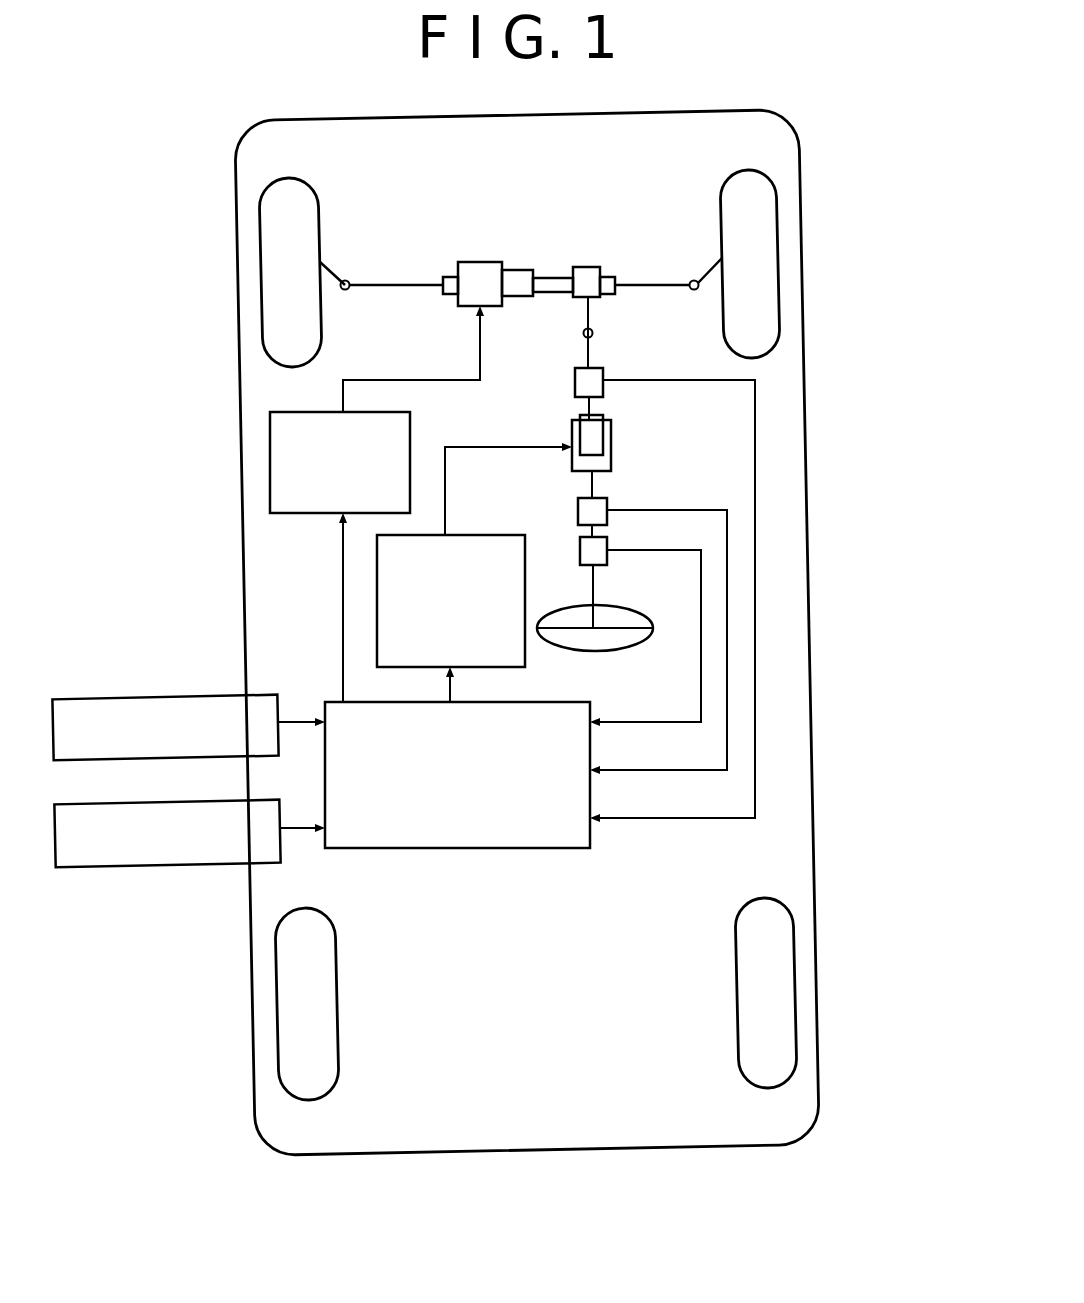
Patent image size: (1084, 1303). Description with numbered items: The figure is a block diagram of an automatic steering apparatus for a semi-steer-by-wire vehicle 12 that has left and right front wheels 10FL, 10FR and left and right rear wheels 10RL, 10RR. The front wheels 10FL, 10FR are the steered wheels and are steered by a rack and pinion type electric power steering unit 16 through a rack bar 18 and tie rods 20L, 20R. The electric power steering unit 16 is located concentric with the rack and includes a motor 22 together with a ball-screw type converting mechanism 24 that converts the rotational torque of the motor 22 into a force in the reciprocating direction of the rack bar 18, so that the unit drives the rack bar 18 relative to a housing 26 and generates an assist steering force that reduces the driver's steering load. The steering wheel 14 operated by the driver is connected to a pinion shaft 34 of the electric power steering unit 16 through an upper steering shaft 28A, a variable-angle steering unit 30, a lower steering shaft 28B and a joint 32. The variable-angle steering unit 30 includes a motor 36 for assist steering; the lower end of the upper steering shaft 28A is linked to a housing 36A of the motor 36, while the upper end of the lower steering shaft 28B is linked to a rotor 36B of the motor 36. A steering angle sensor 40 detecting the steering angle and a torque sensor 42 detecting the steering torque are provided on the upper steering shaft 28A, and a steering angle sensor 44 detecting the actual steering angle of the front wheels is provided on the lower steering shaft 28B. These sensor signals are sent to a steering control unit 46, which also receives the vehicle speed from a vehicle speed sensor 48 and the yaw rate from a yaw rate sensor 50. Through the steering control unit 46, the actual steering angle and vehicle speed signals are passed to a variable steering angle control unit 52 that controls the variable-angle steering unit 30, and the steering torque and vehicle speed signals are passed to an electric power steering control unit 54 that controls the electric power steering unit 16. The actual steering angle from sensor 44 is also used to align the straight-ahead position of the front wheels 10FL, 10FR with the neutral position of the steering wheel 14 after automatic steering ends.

The left front wheel 10FL is at (262, 289).
The right front wheel 10FR is at (778, 278).
The left rear wheel 10RL is at (278, 1012).
The right rear wheel 10RR is at (795, 1013).
The vehicle 12 is at (808, 492).
The steering wheel 14 is at (615, 651).
The electric power steering unit 16 is at (573, 251).
The rack bar 18 is at (432, 283).
The left tie rod 20L is at (350, 270).
The right tie rod 20R is at (700, 270).
The motor 22 is at (480, 262).
The ball-screw type converting mechanism 24 is at (517, 297).
The housing 26 is at (546, 278).
The upper steering shaft 28A is at (598, 585).
The lower steering shaft 28B is at (596, 356).
The variable-angle steering unit 30 is at (570, 462).
The joint 32 is at (594, 333).
The pinion shaft 34 is at (592, 302).
The motor 36 is at (599, 430).
The housing 36A is at (611, 452).
The rotor 36B is at (575, 428).
The steering angle sensor 40 is at (580, 558).
The torque sensor 42 is at (578, 511).
The steering angle sensor 44 is at (575, 381).
The steering control unit 46 is at (460, 850).
The vehicle speed sensor 48 is at (185, 697).
The yaw rate sensor 50 is at (190, 865).
The variable steering angle control unit 52 is at (377, 614).
The electric power steering control unit 54 is at (270, 470).